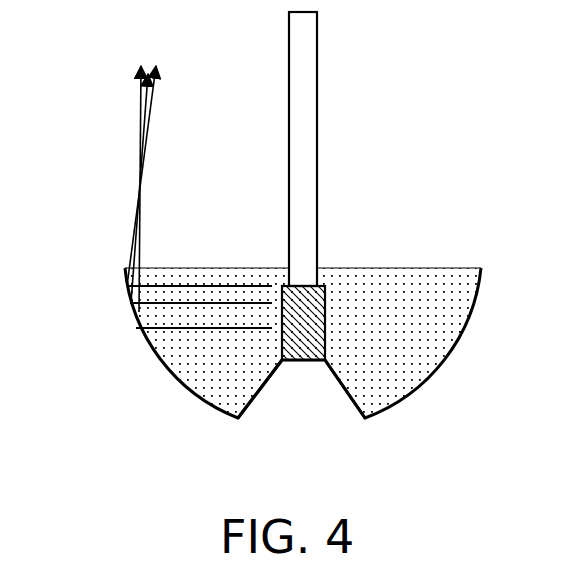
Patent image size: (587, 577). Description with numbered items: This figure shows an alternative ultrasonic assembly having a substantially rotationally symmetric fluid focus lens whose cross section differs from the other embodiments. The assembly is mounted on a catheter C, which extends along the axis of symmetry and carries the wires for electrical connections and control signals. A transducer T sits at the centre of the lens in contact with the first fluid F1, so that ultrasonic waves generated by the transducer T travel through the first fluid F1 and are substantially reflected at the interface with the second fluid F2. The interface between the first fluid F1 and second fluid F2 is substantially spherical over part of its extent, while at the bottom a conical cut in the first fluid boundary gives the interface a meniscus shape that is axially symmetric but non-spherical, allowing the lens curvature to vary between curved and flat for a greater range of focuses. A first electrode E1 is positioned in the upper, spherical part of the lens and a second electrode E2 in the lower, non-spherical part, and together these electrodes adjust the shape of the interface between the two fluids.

The catheter C is at (310, 124).
The transducer T is at (323, 284).
The first fluid F1 is at (412, 280).
The second fluid F2 is at (303, 343).
The first electrode E1 is at (120, 294).
The second electrode E2 is at (260, 400).